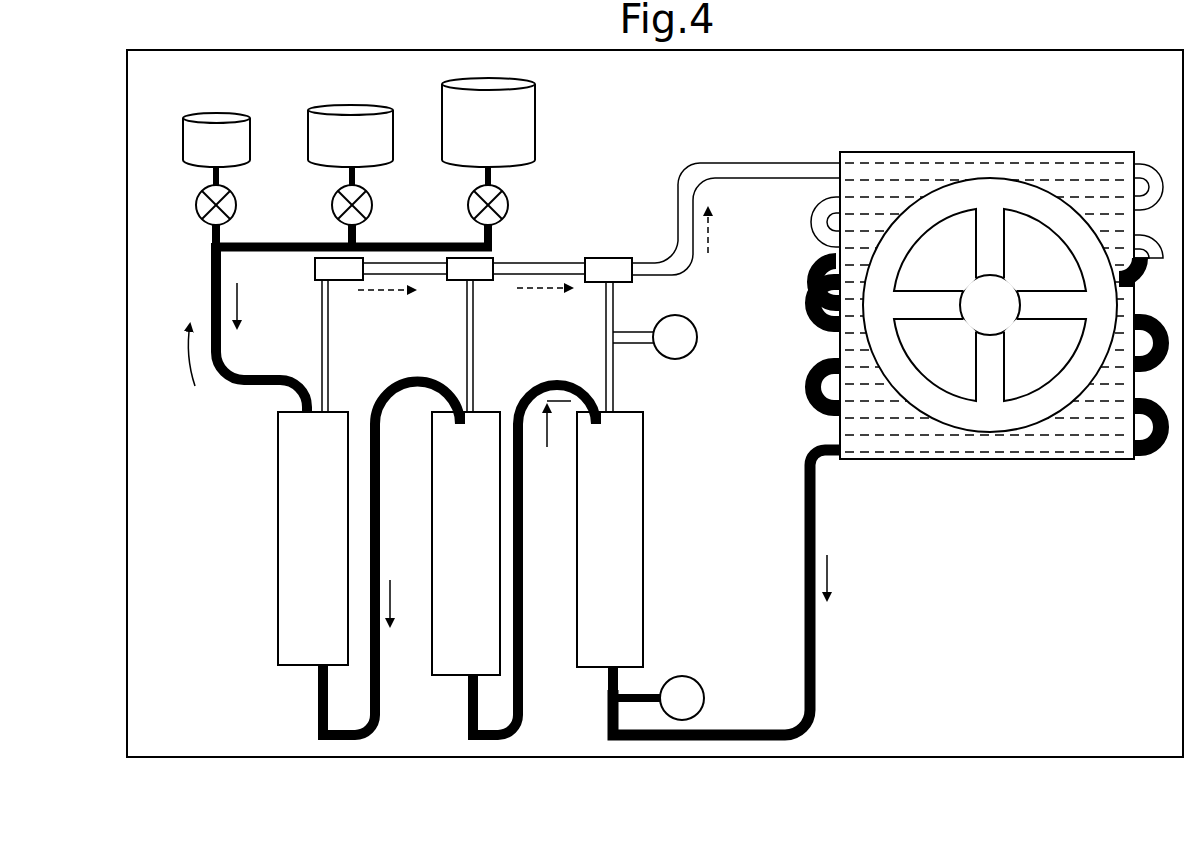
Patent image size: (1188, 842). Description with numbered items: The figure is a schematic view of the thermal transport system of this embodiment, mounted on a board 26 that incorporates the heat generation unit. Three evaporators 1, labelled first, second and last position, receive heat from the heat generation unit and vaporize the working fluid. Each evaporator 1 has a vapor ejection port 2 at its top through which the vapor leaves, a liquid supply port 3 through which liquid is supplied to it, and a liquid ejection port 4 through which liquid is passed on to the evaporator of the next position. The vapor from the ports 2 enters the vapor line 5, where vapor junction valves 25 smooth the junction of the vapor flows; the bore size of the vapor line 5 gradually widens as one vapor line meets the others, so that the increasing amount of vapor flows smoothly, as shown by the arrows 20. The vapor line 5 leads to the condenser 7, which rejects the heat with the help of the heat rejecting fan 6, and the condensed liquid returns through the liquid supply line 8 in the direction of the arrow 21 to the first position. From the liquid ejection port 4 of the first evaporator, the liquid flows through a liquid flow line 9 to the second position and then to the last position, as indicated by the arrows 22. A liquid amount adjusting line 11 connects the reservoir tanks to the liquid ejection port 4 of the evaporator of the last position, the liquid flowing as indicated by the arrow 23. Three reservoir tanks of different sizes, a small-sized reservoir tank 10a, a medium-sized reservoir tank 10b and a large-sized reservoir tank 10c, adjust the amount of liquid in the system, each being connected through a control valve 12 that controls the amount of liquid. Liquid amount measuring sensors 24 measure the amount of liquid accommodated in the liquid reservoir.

The evaporator 1 is at (280, 628).
The vapor ejection port 2 is at (333, 407).
The liquid supply port 3 is at (320, 675).
The liquid ejection port 4 is at (302, 405).
The vapor line 5 is at (544, 259).
The heat rejecting fan 6 is at (966, 152).
The condenser 7 is at (817, 307).
The liquid supply line 8 is at (815, 698).
The liquid flow line 9 is at (527, 583).
The small-sized reservoir tank 10a is at (253, 118).
The medium-sized reservoir tank 10b is at (383, 103).
The large-sized reservoir tank 10c is at (536, 94).
The liquid amount adjusting line 11 is at (212, 296).
The control valve 12 is at (331, 204).
The arrow 20 is at (360, 293).
The arrow 21 is at (832, 573).
The arrow 22 is at (210, 395).
The arrow 23 is at (245, 303).
The liquid amount measuring sensor 24 is at (697, 317).
The vapor junction valve 25 is at (497, 262).
The board 26 is at (275, 757).